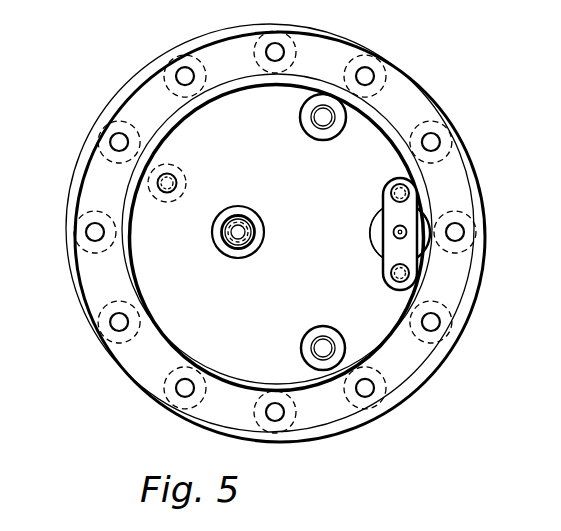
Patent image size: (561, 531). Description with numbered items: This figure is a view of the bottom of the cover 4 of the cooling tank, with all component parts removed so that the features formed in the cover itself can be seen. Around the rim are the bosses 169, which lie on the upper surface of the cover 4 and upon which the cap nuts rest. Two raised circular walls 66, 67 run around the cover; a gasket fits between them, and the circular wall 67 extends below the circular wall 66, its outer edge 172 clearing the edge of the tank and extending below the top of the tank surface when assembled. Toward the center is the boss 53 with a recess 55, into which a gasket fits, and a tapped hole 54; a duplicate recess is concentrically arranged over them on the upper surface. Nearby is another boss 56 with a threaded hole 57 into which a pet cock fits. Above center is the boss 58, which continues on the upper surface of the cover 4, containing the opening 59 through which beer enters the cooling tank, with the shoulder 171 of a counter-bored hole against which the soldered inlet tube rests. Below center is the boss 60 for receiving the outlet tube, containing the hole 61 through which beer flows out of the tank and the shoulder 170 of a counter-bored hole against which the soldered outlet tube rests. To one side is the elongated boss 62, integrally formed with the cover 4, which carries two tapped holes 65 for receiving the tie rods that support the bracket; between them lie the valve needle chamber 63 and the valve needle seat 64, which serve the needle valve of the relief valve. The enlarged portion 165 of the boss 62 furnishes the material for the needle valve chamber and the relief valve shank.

The cover 4 is at (450, 124).
The boss 53 is at (243, 208).
The tapped hole 54 is at (237, 241).
The recess 55 is at (230, 240).
The boss 56 is at (184, 177).
The threaded hole 57 is at (169, 178).
The boss 58 is at (330, 140).
The opening 59 is at (316, 121).
The boss 60 is at (335, 329).
The hole 61 is at (318, 349).
The boss 62 is at (418, 270).
The valve needle chamber 63 is at (396, 237).
The valve needle seat 64 is at (393, 232).
The tapped holes 65 is at (391, 193).
The raised circular wall 66 is at (477, 208).
The raised circular wall 67 is at (423, 197).
The enlarged portion of boss 165 is at (388, 246).
The bosses 169 is at (131, 122).
The shoulder of counter-bored hole 170 is at (334, 341).
The shoulder of counter-bored hole 171 is at (337, 122).
The outer edge of circular wall 172 is at (108, 288).